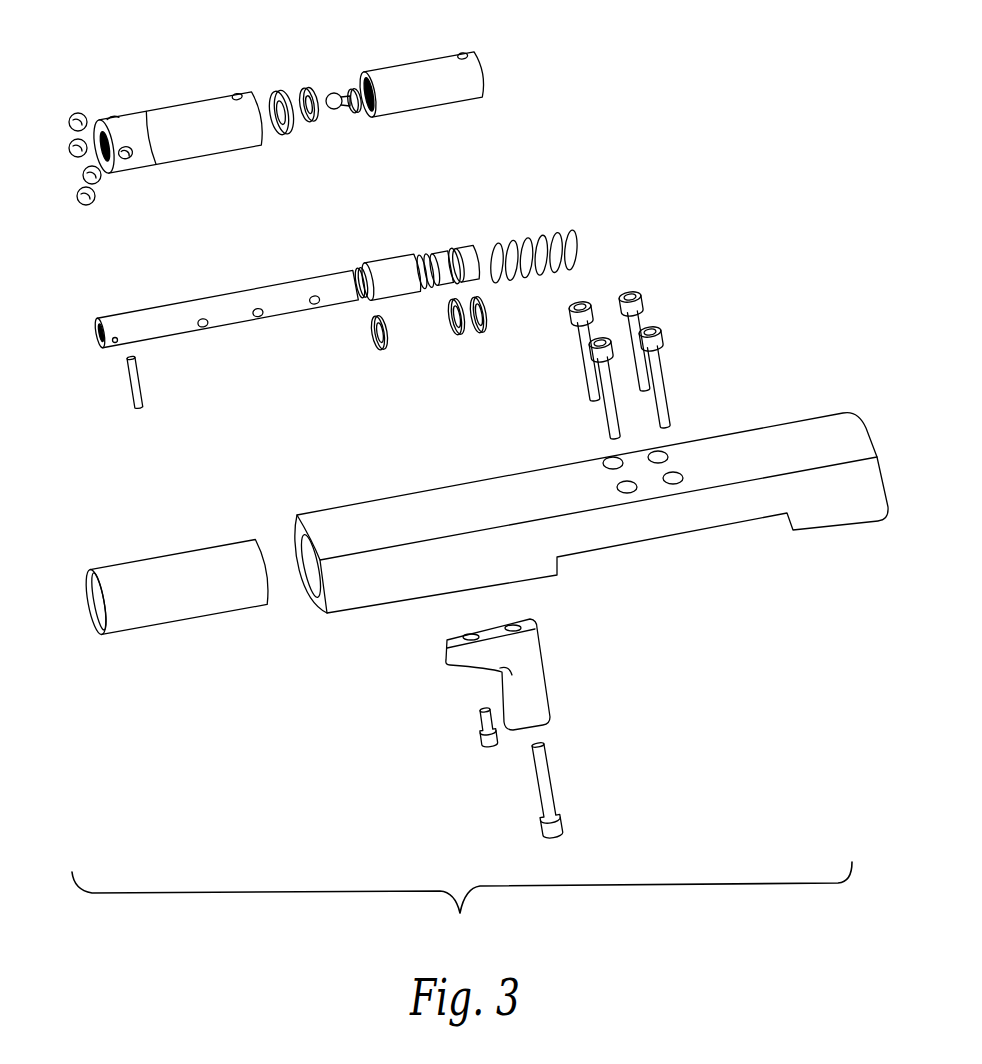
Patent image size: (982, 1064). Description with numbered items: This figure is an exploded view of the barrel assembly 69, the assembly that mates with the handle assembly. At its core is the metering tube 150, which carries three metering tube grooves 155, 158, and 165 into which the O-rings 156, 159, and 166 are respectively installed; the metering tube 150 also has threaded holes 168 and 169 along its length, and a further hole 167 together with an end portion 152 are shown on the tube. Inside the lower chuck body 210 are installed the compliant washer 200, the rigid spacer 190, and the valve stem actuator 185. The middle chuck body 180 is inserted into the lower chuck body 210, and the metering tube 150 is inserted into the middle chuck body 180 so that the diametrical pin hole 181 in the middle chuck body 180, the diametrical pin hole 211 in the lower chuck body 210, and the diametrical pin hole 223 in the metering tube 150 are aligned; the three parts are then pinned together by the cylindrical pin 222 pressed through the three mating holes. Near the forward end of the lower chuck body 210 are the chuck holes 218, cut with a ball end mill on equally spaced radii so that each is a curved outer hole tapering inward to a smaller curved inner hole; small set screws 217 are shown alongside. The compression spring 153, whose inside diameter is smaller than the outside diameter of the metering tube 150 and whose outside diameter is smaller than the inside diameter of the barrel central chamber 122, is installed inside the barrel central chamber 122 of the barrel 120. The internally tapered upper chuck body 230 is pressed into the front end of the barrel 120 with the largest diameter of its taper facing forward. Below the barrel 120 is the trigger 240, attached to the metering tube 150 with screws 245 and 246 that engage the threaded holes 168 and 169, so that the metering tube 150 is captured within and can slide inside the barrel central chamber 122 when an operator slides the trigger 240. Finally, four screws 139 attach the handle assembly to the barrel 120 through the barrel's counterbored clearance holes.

The barrel assembly 69 is at (732, 106).
The set screws 217 is at (77, 194).
The lower chuck body 210 is at (167, 112).
The diametrical pin hole 211 is at (237, 93).
The chuck holes 218 is at (128, 160).
The compliant washer 200 is at (278, 92).
The rigid spacer 190 is at (306, 88).
The valve stem actuator 185 is at (333, 90).
The middle chuck body 180 is at (404, 68).
The diametrical pin hole 181 is at (465, 53).
The metering tube 150 is at (359, 236).
The guide tube 152 is at (97, 336).
The diametrical pin hole 223 is at (113, 347).
The cylindrical pin 222 is at (124, 380).
The metering tube threaded hole 169 is at (203, 330).
The metering tube threaded hole 168 is at (259, 320).
The hole 167 is at (316, 306).
The metering tube groove 165 is at (352, 272).
The metering tube groove 158 is at (426, 256).
The metering tube groove 155 is at (450, 251).
The compression spring 153 is at (538, 231).
The O-ring 166 is at (382, 352).
The O-ring 159 is at (457, 338).
The O-ring 156 is at (481, 333).
The screws 139 is at (656, 332).
The barrel 120 is at (387, 500).
The barrel central chamber 122 is at (303, 580).
The upper chuck body 230 is at (166, 560).
The trigger 240 is at (446, 667).
The screw 246 is at (475, 733).
The screw 245 is at (540, 808).